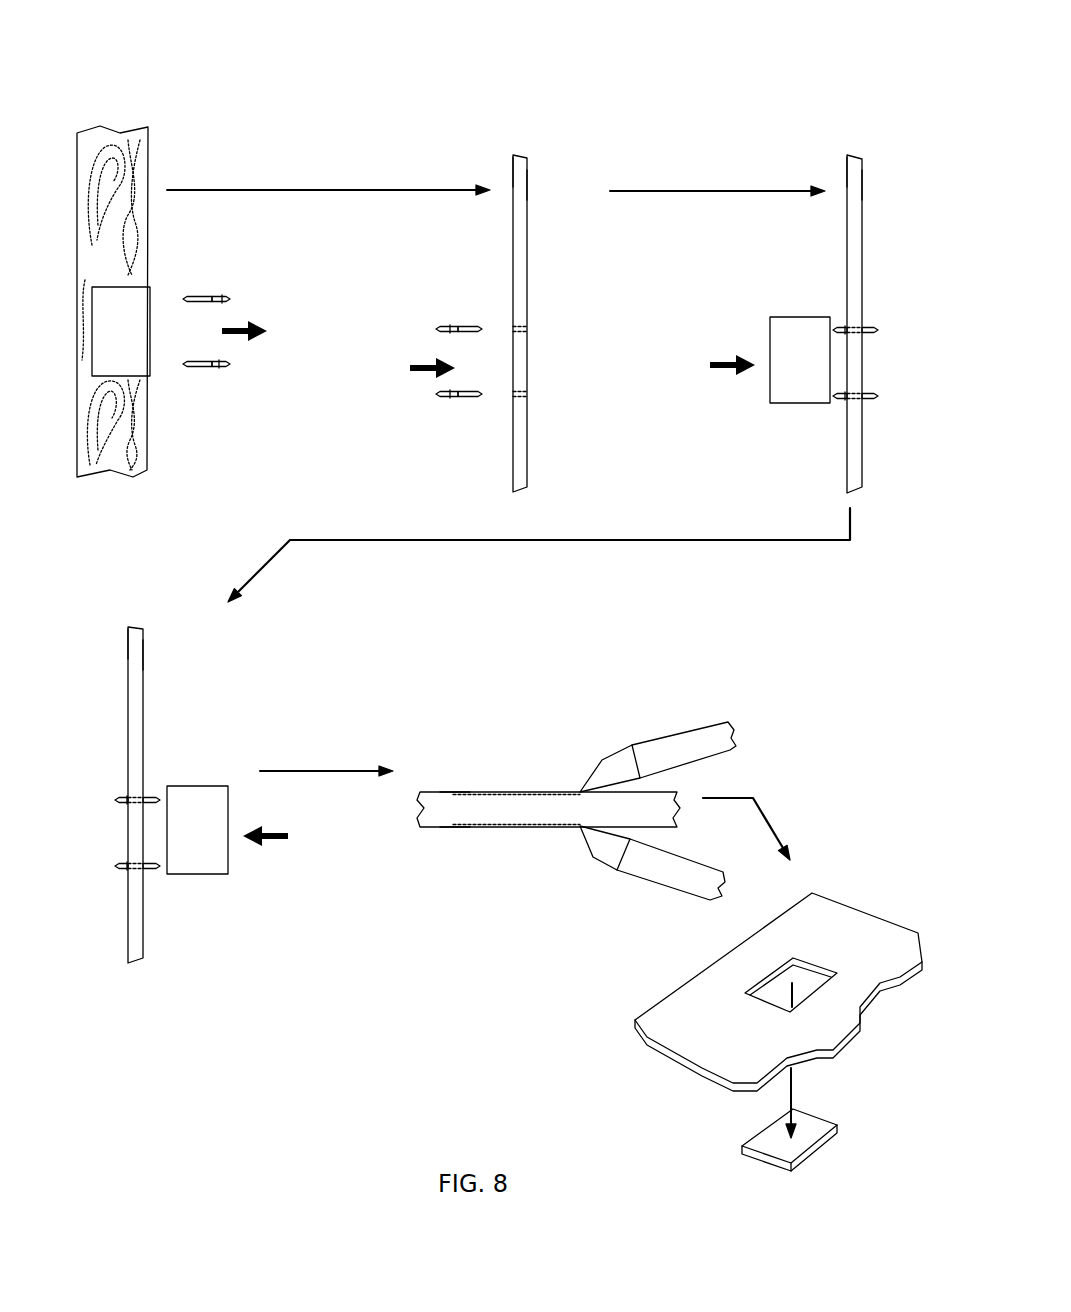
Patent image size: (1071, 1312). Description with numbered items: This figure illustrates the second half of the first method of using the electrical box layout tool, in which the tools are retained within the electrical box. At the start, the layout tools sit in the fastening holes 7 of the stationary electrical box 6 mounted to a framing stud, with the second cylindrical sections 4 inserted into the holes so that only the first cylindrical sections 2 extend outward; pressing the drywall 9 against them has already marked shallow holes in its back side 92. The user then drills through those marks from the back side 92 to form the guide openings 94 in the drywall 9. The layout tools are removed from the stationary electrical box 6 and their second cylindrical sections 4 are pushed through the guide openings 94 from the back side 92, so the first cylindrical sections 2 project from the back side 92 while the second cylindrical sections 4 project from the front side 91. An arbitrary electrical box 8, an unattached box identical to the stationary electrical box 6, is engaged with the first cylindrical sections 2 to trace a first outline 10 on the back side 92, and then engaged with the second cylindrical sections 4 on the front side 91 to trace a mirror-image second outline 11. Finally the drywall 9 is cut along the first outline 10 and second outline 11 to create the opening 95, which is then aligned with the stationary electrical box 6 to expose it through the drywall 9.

The first cylindrical section 2 is at (222, 297).
The second cylindrical section 4 is at (196, 302).
The stationary electrical box 6 is at (100, 323).
The fastening holes 7 is at (125, 111).
The arbitrary electrical box 8 is at (775, 327).
The drywall 9 is at (518, 149).
The first outline 10 is at (515, 828).
The second outline 11 is at (510, 790).
The front side 91 is at (528, 185).
The back side 92 is at (513, 157).
The guide openings 94 is at (530, 329).
The opening 95 is at (779, 988).